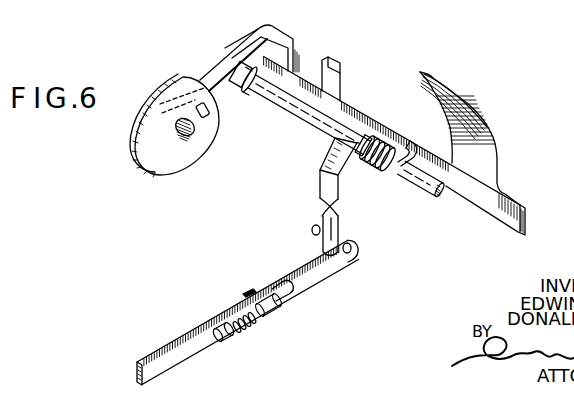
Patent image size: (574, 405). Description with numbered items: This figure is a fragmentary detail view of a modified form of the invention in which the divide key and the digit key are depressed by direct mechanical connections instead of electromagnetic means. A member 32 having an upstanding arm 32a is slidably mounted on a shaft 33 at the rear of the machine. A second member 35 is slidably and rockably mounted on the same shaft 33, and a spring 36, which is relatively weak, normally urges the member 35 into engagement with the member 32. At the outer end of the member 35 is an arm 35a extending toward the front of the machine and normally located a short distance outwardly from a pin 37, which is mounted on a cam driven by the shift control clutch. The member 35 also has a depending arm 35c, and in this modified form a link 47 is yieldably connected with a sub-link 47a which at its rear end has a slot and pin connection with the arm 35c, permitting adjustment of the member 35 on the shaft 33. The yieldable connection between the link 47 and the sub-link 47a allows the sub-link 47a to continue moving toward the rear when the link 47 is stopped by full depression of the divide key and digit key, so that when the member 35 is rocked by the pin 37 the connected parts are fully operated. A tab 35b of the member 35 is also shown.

The member 32 is at (514, 204).
The upstanding arm 32a is at (481, 122).
The shaft 33 is at (300, 117).
The second member 35 is at (342, 110).
The arm 35a is at (214, 73).
The tab of bracket 35b is at (330, 67).
The depending arm 35c is at (327, 180).
The spring 36 is at (382, 143).
The pin 37 is at (203, 100).
The link 47 is at (160, 362).
The sub-link 47a is at (320, 266).